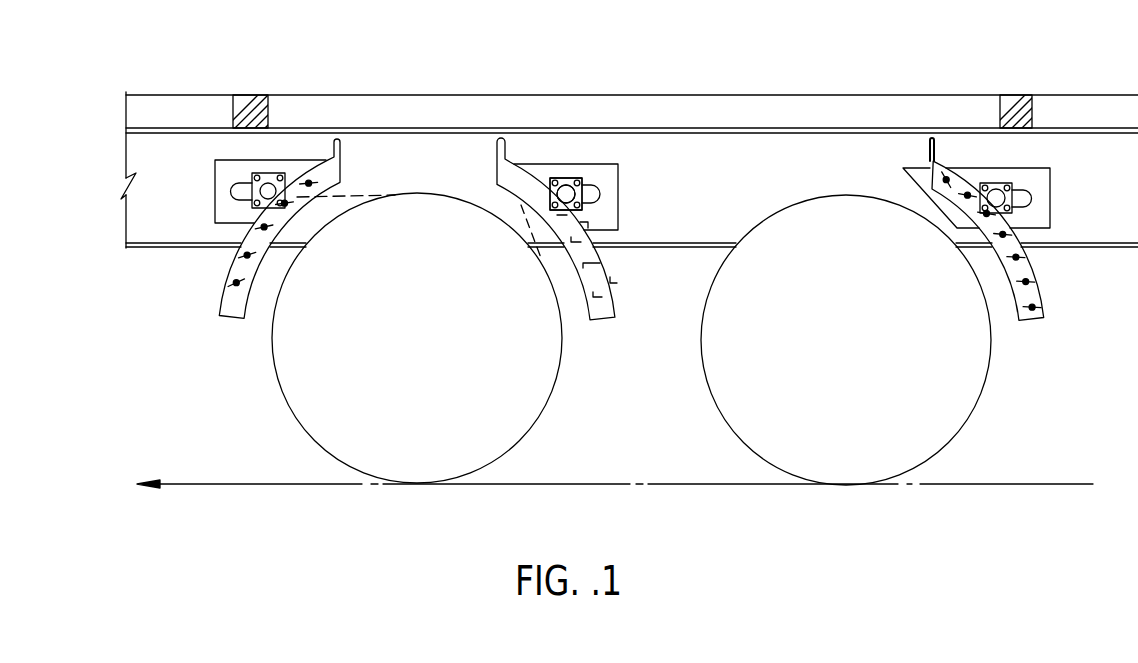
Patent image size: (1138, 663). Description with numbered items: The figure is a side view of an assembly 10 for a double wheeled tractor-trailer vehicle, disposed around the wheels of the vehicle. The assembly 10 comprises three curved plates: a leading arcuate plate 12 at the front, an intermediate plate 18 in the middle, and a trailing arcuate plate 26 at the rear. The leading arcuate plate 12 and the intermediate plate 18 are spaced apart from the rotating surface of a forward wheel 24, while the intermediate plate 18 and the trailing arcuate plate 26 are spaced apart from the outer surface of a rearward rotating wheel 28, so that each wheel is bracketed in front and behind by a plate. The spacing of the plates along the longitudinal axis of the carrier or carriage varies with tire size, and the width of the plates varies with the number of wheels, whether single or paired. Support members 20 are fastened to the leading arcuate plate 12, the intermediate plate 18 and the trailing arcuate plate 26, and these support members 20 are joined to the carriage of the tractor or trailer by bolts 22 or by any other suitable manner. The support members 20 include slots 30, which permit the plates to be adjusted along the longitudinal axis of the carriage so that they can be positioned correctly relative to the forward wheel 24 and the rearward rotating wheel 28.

The assembly 10 is at (112, 86).
The leading arcuate plate 12 is at (328, 158).
The intermediate plate 18 is at (512, 162).
The support members 20 is at (560, 178).
The bolts 22 is at (568, 187).
The forward wheel 24 is at (416, 194).
The trailing arcuate plate 26 is at (948, 172).
The rearward rotating wheel 28 is at (832, 175).
The slots 30 is at (240, 185).